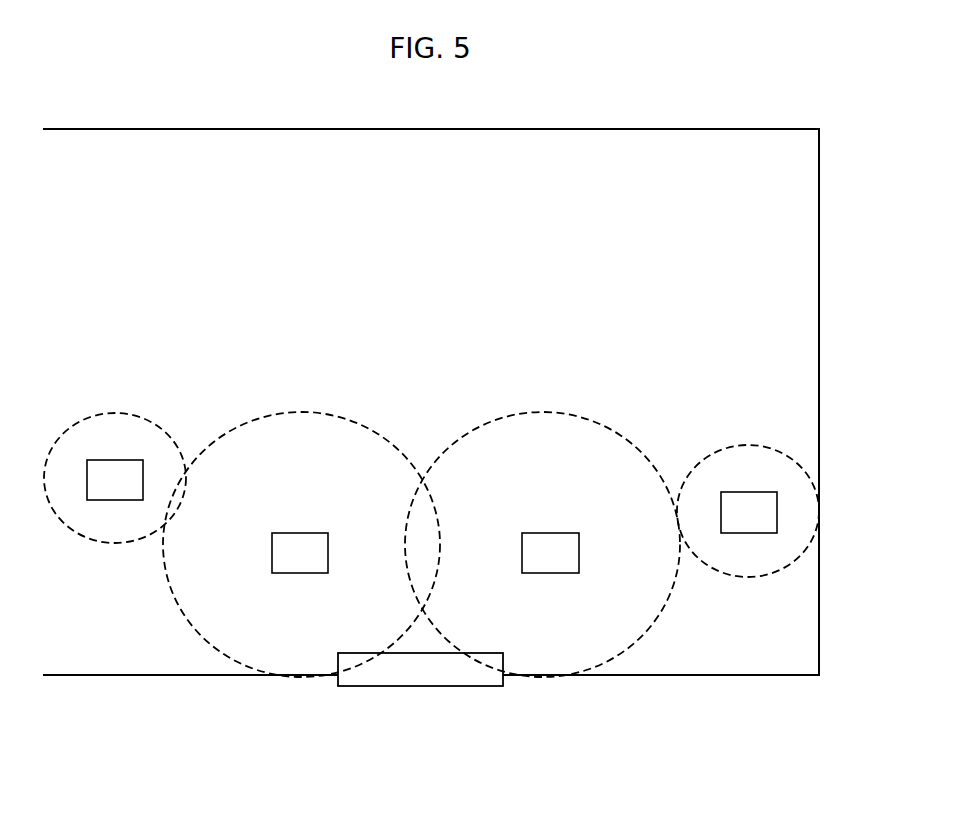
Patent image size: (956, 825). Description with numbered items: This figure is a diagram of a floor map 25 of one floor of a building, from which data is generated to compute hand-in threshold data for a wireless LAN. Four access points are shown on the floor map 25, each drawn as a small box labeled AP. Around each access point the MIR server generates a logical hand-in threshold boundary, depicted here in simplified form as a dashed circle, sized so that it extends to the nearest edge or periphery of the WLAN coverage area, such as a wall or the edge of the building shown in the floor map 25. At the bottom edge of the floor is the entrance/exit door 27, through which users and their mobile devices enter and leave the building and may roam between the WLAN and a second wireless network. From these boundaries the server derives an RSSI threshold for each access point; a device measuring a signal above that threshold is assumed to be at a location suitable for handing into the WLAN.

The floor map 25 is at (120, 129).
The entrance/exit door 27 is at (404, 686).